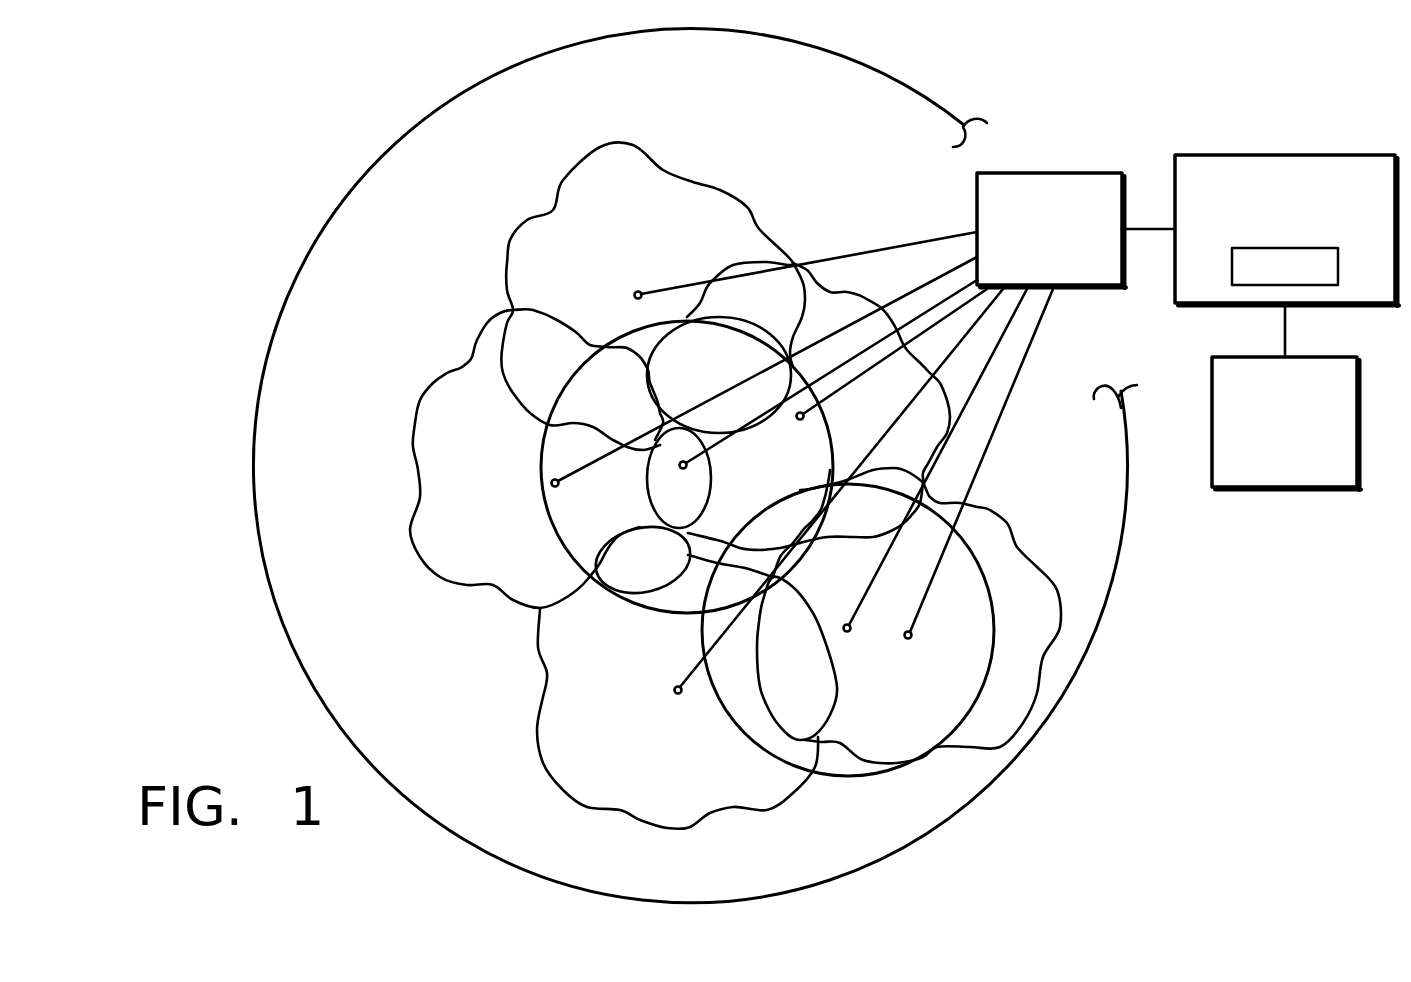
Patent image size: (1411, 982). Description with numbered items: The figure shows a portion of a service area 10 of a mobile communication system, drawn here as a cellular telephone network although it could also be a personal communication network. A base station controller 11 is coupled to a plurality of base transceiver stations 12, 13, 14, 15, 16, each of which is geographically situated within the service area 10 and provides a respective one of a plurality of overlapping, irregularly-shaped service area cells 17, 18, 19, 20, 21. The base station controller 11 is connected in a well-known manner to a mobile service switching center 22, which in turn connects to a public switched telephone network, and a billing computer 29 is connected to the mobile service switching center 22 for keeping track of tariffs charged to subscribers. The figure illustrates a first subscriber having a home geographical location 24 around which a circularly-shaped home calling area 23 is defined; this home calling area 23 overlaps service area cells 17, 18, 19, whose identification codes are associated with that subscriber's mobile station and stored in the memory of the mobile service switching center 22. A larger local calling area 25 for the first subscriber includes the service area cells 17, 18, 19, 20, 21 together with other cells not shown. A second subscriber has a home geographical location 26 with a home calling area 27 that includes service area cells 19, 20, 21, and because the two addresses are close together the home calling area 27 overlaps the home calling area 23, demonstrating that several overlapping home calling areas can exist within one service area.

The service area 10 is at (998, 74).
The base station controller 11 is at (1076, 230).
The base transceiver station 12 is at (637, 292).
The base transceiver station 13 is at (802, 419).
The base transceiver station 14 is at (557, 486).
The base transceiver station 15 is at (910, 638).
The base transceiver station 16 is at (676, 692).
The service area cell 17 is at (637, 150).
The service area cell 18 is at (853, 298).
The service area cell 19 is at (422, 553).
The service area cell 20 is at (1037, 673).
The service area cell 21 is at (755, 808).
The mobile service switching center 22 is at (1287, 256).
The home calling area 23 is at (541, 443).
The home geographical location 24 is at (680, 465).
The local calling area 25 is at (341, 200).
The home geographical location 26 is at (849, 631).
The home calling area 27 is at (968, 703).
The billing computer 29 is at (1286, 423).